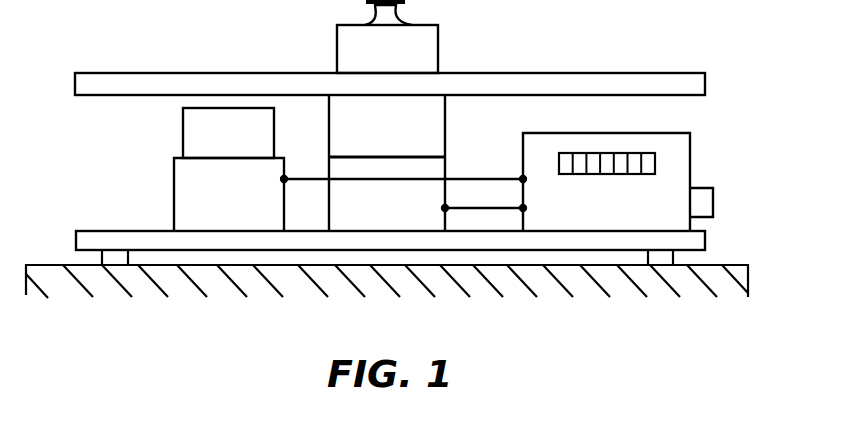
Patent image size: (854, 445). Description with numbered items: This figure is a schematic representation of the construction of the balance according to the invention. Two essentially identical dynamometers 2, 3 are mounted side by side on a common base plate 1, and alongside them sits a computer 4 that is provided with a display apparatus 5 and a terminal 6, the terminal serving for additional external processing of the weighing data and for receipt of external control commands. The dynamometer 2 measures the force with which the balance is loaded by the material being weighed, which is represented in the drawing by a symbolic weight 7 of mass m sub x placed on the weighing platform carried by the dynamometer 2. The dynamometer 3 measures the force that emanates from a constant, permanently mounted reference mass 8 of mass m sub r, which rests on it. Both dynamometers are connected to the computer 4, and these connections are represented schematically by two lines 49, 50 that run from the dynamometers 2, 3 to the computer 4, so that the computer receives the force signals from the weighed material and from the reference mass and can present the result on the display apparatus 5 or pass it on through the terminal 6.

The common base plate 1 is at (130, 237).
The dynamometer 2 is at (353, 198).
The dynamometer 3 is at (196, 200).
The computer 4 is at (653, 218).
The display apparatus 5 is at (655, 160).
The terminal 6 is at (713, 202).
The symbolic weight 7 is at (438, 50).
The reference mass 8 is at (183, 125).
The line 49 is at (500, 206).
The line 50 is at (500, 178).